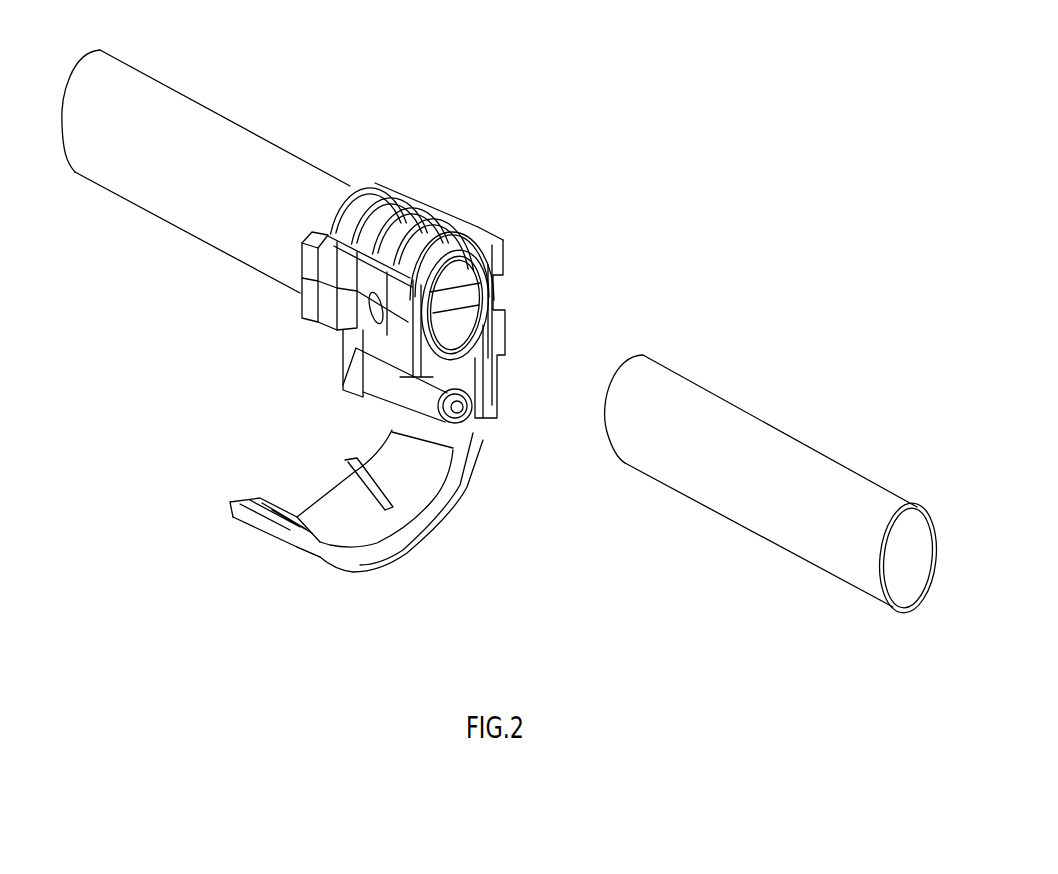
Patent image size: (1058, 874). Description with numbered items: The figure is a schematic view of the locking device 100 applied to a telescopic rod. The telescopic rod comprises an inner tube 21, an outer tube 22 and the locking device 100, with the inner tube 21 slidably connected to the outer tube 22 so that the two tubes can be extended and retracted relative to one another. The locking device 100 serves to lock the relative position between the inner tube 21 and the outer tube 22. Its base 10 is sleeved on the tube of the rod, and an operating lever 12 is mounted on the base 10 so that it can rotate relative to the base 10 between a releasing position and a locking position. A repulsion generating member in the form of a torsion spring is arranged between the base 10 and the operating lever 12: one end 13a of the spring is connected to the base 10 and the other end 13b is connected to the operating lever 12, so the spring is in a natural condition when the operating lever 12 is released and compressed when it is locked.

The locking device 100 is at (428, 190).
The base 10 is at (477, 230).
The operating lever 12 is at (290, 525).
The one end of the torsion spring 13a is at (470, 402).
The other end of the torsion spring 13b is at (462, 428).
The inner tube 21 is at (707, 408).
The outer tube 22 is at (160, 92).